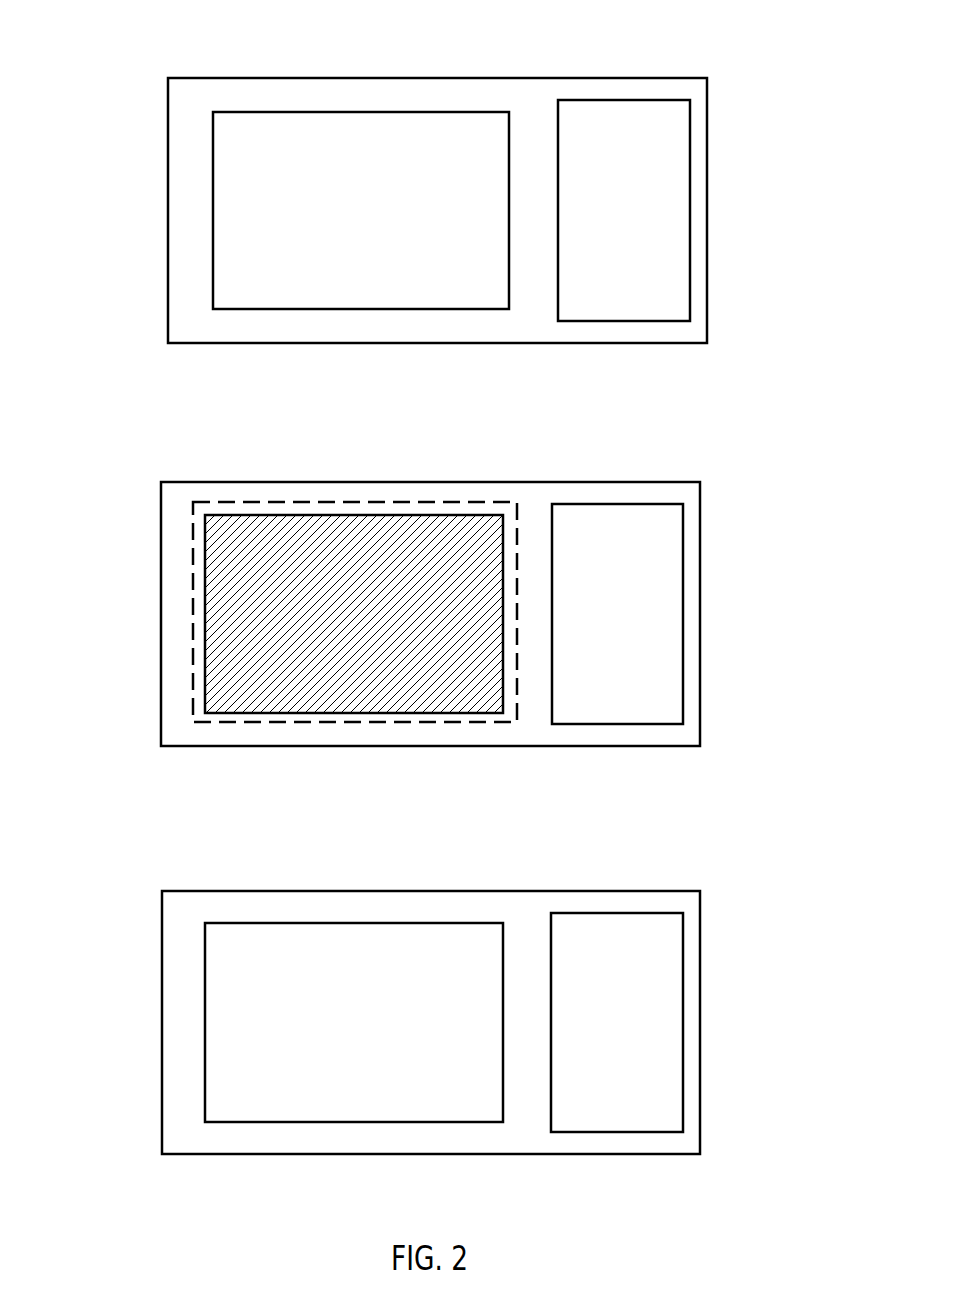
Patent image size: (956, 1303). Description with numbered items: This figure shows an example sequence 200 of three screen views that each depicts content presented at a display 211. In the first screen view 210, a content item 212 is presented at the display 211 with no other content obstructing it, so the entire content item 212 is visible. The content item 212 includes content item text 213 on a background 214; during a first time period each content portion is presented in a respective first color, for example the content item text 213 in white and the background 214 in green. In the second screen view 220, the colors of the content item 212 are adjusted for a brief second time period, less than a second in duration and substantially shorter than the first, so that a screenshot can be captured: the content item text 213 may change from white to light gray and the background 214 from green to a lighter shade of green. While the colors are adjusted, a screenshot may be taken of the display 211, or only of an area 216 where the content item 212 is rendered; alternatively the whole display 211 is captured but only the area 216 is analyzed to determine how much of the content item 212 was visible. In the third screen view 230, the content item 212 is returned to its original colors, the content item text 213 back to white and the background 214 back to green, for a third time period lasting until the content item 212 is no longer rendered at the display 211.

The sequence 200 is at (764, 59).
The screen view 210 is at (129, 88).
The display 211 is at (707, 185).
The content item 212 is at (224, 186).
The content item text 213 is at (261, 217).
The background 214 is at (234, 278).
The area 216 is at (211, 731).
The screen view 220 is at (122, 493).
The screen view 230 is at (122, 900).